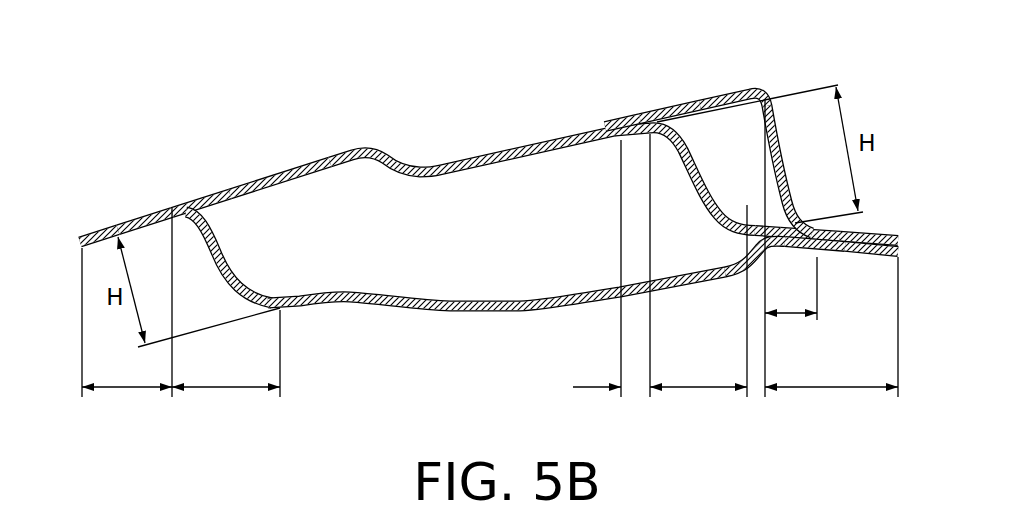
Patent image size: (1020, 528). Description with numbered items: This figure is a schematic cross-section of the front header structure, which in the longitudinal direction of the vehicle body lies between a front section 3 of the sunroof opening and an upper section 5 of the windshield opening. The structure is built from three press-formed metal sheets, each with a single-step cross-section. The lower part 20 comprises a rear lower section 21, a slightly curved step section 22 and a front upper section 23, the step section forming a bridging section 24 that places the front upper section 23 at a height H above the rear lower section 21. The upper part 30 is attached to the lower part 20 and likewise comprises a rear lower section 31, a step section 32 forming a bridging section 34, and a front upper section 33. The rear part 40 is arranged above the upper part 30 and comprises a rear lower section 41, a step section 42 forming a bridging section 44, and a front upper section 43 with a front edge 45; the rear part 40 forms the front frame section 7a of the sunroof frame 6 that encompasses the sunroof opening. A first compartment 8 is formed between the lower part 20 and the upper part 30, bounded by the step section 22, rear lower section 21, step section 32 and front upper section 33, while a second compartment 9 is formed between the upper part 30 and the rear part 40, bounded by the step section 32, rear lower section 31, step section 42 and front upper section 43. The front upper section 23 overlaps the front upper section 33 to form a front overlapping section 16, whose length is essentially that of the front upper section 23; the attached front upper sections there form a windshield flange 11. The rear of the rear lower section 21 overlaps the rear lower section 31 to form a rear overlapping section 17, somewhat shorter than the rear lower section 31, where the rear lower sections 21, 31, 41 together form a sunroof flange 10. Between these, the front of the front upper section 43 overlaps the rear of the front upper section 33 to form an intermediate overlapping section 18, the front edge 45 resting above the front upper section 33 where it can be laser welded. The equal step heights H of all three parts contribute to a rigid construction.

The front section 3 is at (898, 245).
The upper section 5 is at (80, 240).
The sunroof frame 6 is at (877, 235).
The front frame section 7a is at (860, 228).
The first compartment 8 is at (452, 250).
The second compartment 9 is at (730, 140).
The sunroof flange 10 is at (868, 230).
The windshield flange 11 is at (172, 207).
The front overlapping section 16 is at (127, 314).
The rear overlapping section 17 is at (831, 260).
The intermediate overlapping section 18 is at (611, 277).
The lower part 20 is at (310, 308).
The rear lower section 21 is at (528, 311).
The step section 22 is at (212, 257).
The front upper section 23 is at (145, 231).
The bridging section 24 is at (226, 365).
The upper part 30 is at (303, 166).
The rear lower section 31 is at (745, 227).
The step section 32 is at (693, 182).
The front upper section 33 is at (343, 162).
The bridging section 34 is at (698, 312).
The rear part 40 is at (667, 107).
The rear lower section 41 is at (887, 239).
The step section 42 is at (784, 163).
The front upper section 43 is at (723, 95).
The bridging section 44 is at (791, 301).
The front edge 45 is at (618, 119).